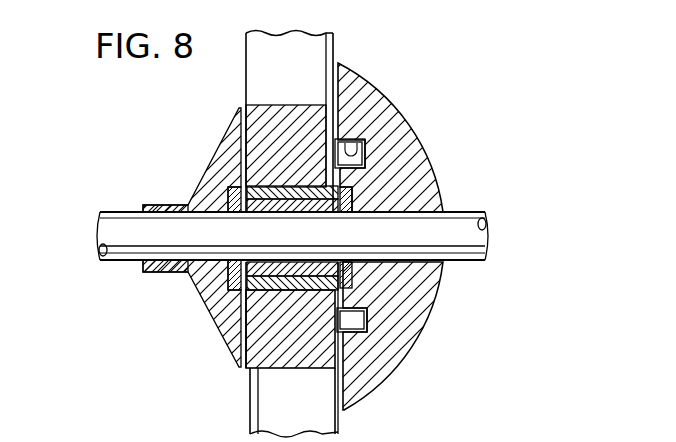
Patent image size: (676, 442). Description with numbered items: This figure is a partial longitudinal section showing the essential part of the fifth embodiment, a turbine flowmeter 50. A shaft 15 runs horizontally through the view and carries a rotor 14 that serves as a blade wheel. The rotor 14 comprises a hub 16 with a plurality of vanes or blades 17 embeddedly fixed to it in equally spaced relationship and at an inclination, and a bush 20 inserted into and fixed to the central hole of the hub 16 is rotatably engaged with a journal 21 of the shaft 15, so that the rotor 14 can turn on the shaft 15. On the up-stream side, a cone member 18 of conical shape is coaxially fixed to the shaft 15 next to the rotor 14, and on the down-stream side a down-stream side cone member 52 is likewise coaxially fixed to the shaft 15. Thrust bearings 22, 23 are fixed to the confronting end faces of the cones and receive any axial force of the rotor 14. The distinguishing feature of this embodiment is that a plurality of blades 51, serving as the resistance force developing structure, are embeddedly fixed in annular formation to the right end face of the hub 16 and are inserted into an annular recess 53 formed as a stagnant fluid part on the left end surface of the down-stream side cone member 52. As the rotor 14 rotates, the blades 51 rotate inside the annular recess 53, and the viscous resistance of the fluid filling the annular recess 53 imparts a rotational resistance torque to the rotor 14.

The turbine flowmeter 50 is at (202, 110).
The rotor 14 is at (343, 57).
The shaft 15 is at (121, 212).
The hub 16 is at (273, 366).
The blades 17 is at (330, 423).
The cone member 18 is at (227, 330).
The bush 20 is at (292, 192).
The journal 21 is at (287, 266).
The thrust bearing 22 is at (222, 278).
The thrust bearing 23 is at (354, 276).
The blades 51 is at (366, 157).
The down-stream side cone member 52 is at (438, 189).
The annular recess 53 is at (347, 187).